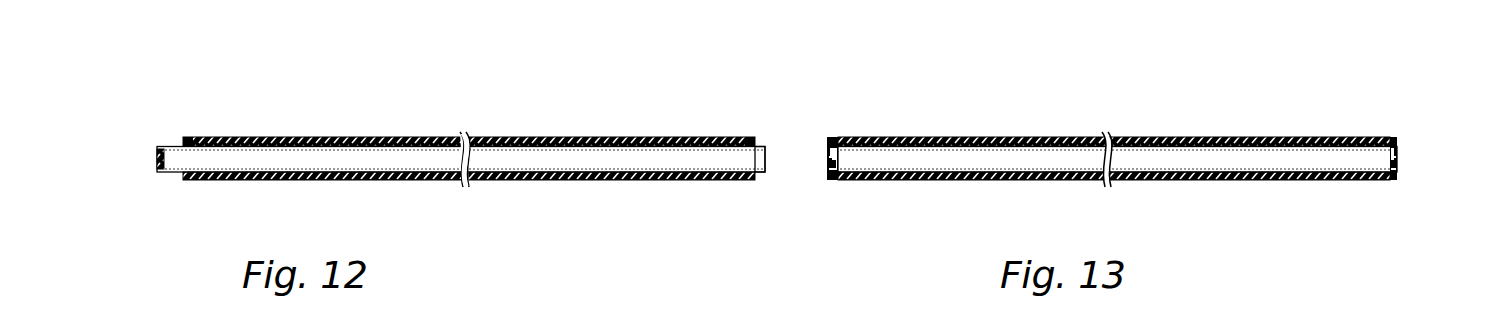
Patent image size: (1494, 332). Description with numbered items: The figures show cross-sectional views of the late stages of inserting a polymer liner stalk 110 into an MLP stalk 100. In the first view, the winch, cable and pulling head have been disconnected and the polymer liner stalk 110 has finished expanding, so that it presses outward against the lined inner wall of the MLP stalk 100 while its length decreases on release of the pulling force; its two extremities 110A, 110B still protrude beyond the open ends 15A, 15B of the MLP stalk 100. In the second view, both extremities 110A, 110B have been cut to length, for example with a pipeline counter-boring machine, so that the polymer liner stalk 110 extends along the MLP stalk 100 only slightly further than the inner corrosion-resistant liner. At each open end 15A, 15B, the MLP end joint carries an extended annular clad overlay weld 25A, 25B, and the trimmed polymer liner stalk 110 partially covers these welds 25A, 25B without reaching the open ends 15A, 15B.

In FIG. 12, the MLP stalk 100 is at (412, 133).
In FIG. 13, the MLP stalk 100 is at (1070, 133).
In FIG. 12, the polymer liner stalk 110 is at (301, 152).
In FIG. 13, the polymer liner stalk 110 is at (960, 157).
In FIG. 12, the first extremity of the polymer liner stalk 110A is at (157, 157).
In FIG. 13, the first extremity of the polymer liner stalk 110A is at (829, 162).
In FIG. 12, the second extremity of the polymer liner stalk 110B is at (767, 156).
In FIG. 13, the second extremity of the polymer liner stalk 110B is at (1398, 162).
In FIG. 12, the open end of the MLP stalk 15A is at (184, 146).
In FIG. 13, the open end of the MLP stalk 15A is at (827, 153).
In FIG. 12, the open end of the MLP stalk 15B is at (762, 147).
In FIG. 13, the open end of the MLP stalk 15B is at (1400, 157).
In FIG. 13, the extended annular clad overlay weld 25A is at (833, 142).
In FIG. 13, the second end cap 25B is at (1393, 142).